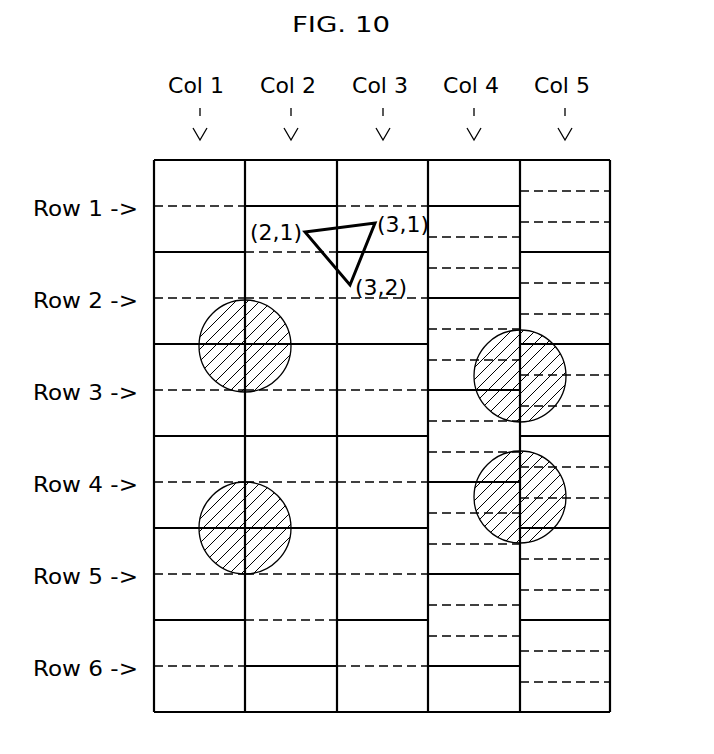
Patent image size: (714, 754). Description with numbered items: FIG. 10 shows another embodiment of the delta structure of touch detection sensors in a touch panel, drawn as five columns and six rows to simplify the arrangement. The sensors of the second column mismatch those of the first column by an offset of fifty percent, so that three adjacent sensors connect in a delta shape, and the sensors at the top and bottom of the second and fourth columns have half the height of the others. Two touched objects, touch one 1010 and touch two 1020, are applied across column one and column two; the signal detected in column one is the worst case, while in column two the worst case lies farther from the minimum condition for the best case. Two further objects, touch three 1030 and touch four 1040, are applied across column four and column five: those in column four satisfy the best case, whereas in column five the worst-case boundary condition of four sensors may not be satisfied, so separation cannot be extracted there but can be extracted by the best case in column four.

The touch 1 1010 is at (247, 346).
The touch 2 1020 is at (247, 528).
The touch 3 1030 is at (522, 376).
The touch 4 1040 is at (522, 497).